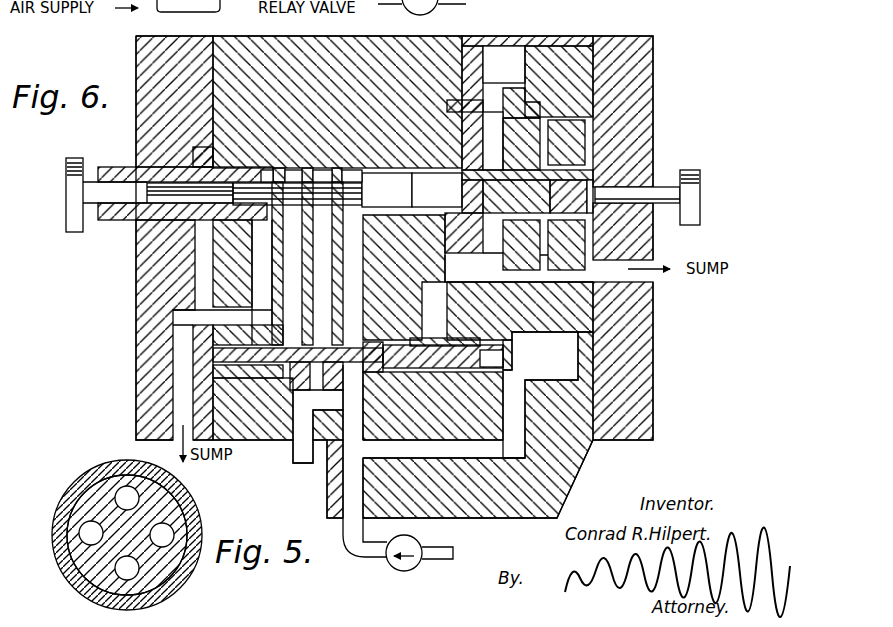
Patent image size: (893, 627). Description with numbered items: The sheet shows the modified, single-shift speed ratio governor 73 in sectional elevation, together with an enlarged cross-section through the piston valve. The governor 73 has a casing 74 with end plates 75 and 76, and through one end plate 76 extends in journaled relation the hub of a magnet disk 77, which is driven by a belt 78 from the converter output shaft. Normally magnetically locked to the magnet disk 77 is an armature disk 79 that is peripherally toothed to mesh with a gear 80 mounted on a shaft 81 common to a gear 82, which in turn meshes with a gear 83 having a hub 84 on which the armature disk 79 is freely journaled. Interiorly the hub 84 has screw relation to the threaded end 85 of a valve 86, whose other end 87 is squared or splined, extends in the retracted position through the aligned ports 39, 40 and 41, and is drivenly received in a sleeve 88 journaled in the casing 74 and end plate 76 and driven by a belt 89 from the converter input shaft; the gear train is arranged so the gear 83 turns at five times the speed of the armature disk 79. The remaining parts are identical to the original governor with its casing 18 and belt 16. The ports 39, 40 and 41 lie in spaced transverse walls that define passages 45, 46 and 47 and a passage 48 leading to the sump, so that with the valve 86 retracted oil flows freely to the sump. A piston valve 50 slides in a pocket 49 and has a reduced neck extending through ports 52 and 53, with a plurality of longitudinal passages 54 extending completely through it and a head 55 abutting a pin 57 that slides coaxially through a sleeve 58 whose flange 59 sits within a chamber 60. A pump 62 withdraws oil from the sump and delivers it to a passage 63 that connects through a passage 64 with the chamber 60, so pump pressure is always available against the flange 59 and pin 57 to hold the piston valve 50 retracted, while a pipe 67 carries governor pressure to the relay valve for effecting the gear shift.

In FIG. 6, the belt 16 is at (653, 144).
In FIG. 5, the casing 18 is at (202, 508).
In FIG. 6, the port 39 is at (330, 170).
In FIG. 6, the port 40 is at (296, 170).
In FIG. 6, the port 41 is at (267, 170).
In FIG. 6, the passage 45 is at (360, 275).
In FIG. 6, the passage 46 is at (329, 275).
In FIG. 6, the passage 47 is at (300, 275).
In FIG. 6, the passage 48 is at (270, 275).
In FIG. 5, the pocket 49 is at (185, 529).
In FIG. 6, the piston valve 50 is at (358, 356).
In FIG. 5, the piston valve 50 is at (164, 511).
In FIG. 6, the port 52 is at (311, 350).
In FIG. 6, the port 53 is at (342, 350).
In FIG. 5, the longitudinal passages 54 is at (114, 494).
In FIG. 6, the head 55 is at (369, 344).
In FIG. 6, the pin 57 is at (390, 372).
In FIG. 6, the sleeve 58 is at (430, 340).
In FIG. 6, the flange 59 is at (512, 346).
In FIG. 6, the chamber 60 is at (565, 367).
In FIG. 6, the pump 62 is at (418, 537).
In FIG. 6, the passage 63 is at (353, 440).
In FIG. 6, the passage 64 is at (444, 449).
In FIG. 6, the pipe 67 is at (290, 453).
In FIG. 6, the governor 73 is at (665, 37).
In FIG. 6, the casing 74 is at (533, 38).
In FIG. 6, the end plate 75 is at (655, 79).
In FIG. 6, the end plate 76 is at (136, 56).
In FIG. 6, the magnet disk 77 is at (600, 130).
In FIG. 6, the belt 78 is at (701, 208).
In FIG. 6, the armature disk 79 is at (521, 144).
In FIG. 6, the gear 80 is at (527, 99).
In FIG. 6, the shaft 81 is at (491, 96).
In FIG. 6, the gear 82 is at (462, 128).
In FIG. 6, the gear 83 is at (462, 156).
In FIG. 6, the hub 84 is at (462, 175).
In FIG. 6, the threaded end 85 is at (437, 190).
In FIG. 6, the valve 86 is at (387, 190).
In FIG. 6, the other end 87 is at (283, 168).
In FIG. 6, the sleeve 88 is at (170, 166).
In FIG. 6, the belt 89 is at (66, 198).